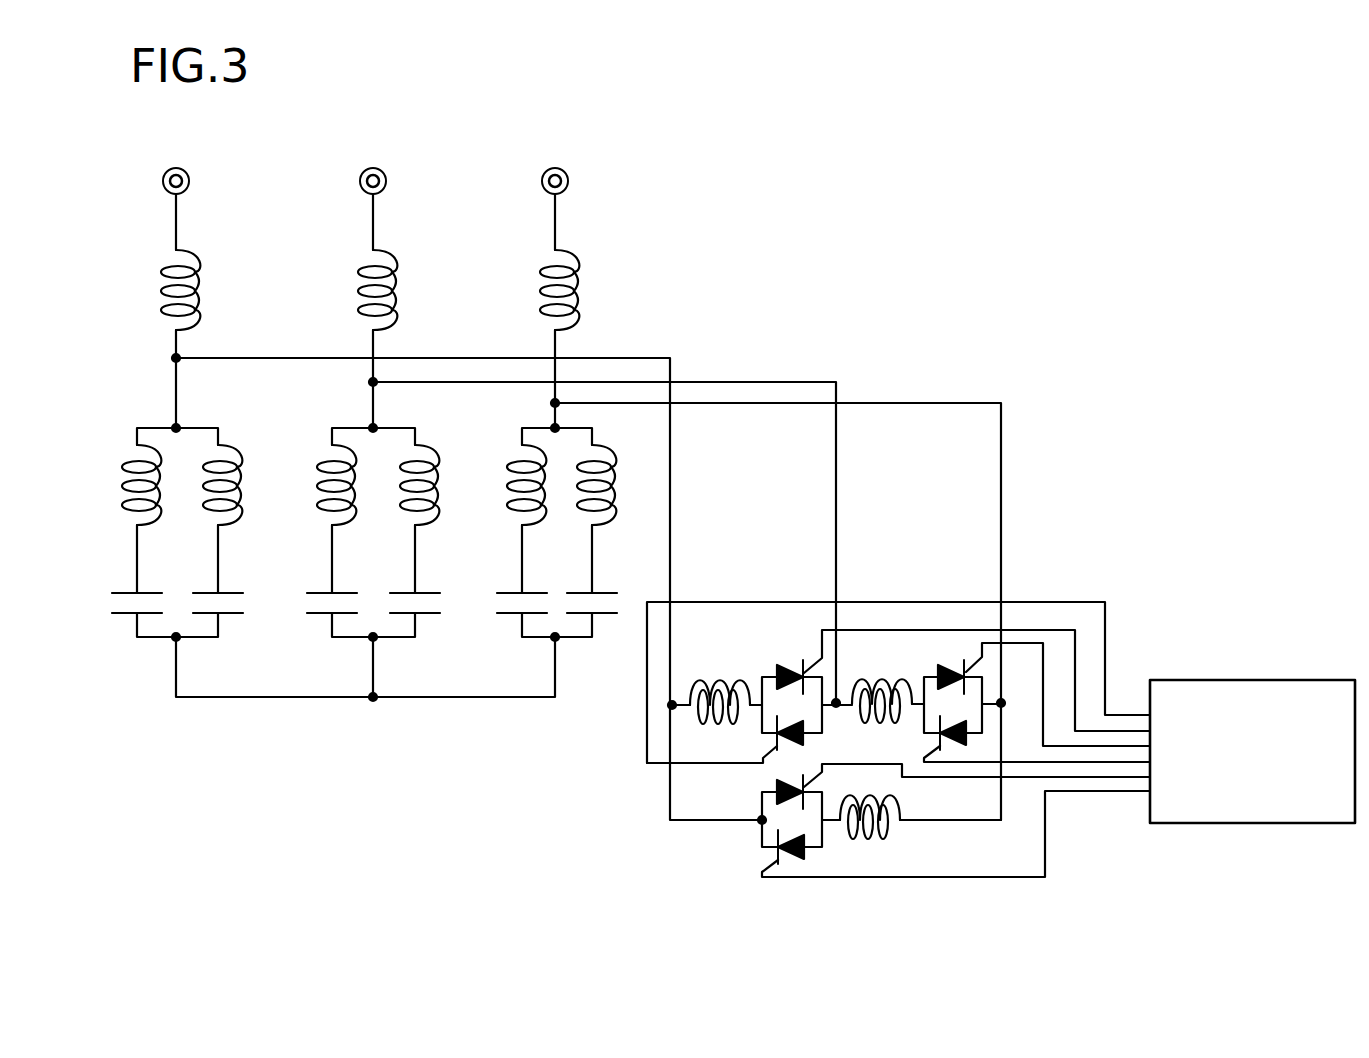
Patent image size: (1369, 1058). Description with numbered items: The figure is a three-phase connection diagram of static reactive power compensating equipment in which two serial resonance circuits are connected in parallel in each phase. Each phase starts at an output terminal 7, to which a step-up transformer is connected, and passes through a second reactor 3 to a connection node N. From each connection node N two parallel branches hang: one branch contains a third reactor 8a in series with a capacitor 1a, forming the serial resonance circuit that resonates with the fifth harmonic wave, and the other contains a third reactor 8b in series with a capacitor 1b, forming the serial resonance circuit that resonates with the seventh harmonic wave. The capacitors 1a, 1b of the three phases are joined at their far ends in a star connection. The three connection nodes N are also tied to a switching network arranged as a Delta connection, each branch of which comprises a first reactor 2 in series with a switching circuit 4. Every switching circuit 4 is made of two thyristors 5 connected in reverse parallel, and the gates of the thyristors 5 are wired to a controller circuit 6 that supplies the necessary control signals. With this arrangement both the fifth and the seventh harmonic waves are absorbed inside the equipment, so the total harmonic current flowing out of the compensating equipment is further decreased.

The output terminal 7 is at (189, 181).
The second reactor 3 is at (197, 282).
The connection node N is at (172, 359).
The third reactor 8a is at (133, 448).
The third reactor 8b is at (236, 450).
The capacitor 1a is at (125, 590).
The capacitor 1b is at (236, 592).
The first reactor 2 is at (716, 685).
The switching circuit 4 is at (770, 672).
The thyristor 5 is at (792, 665).
The controller circuit 6 is at (1240, 681).